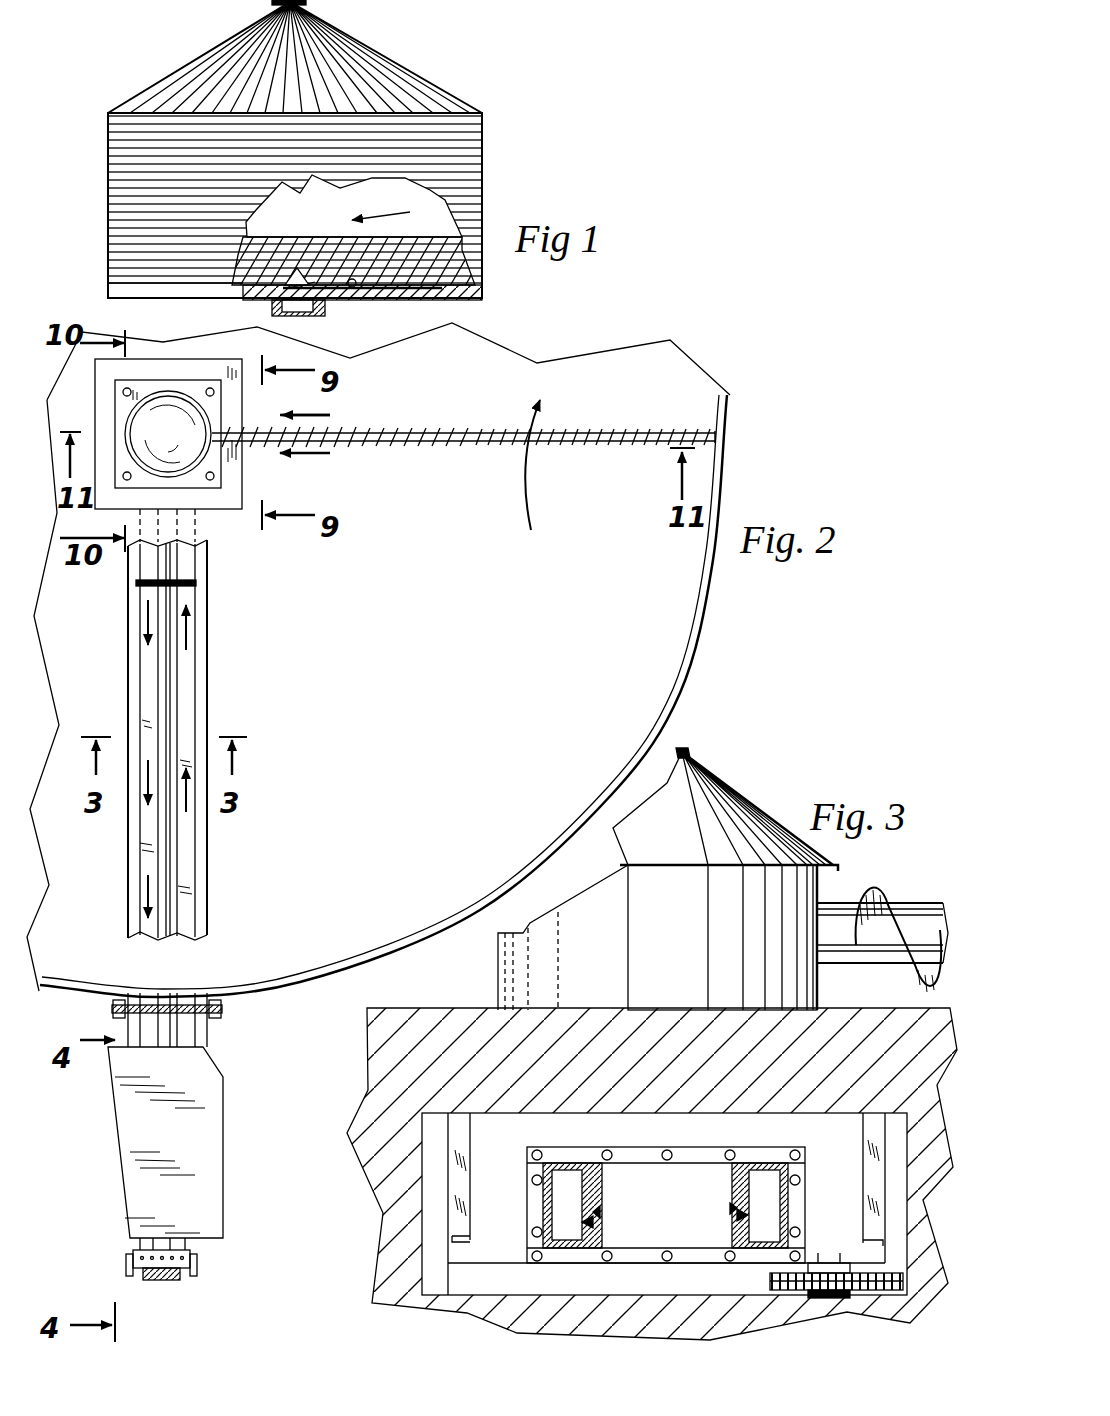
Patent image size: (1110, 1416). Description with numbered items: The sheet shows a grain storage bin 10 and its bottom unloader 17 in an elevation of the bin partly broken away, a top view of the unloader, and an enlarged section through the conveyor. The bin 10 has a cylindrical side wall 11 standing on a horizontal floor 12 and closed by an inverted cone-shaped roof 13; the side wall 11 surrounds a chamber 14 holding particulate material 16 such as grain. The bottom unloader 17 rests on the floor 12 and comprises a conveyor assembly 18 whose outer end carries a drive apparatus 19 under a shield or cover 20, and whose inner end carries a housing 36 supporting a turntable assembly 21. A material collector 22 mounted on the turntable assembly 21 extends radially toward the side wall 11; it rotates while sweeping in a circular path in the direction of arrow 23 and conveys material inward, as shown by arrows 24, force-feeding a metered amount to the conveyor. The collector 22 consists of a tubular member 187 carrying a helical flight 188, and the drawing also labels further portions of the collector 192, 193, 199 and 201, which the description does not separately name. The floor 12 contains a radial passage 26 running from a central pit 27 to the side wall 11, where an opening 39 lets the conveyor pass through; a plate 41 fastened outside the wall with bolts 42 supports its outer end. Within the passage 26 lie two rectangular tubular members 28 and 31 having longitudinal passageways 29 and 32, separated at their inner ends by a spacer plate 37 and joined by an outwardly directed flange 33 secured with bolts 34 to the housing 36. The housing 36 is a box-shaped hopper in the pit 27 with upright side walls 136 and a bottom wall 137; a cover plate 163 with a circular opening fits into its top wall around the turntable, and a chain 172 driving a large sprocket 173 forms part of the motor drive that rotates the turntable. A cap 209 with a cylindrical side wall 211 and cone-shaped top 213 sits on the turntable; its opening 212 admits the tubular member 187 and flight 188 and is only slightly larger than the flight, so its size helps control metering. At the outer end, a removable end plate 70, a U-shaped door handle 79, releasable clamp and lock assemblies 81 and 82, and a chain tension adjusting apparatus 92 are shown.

In FIG. 1, the material storage structure or bin 10 is at (317, 167).
In FIG. 1, the cylindrical side wall 11 is at (470, 168).
In FIG. 2, the cylindrical side wall 11 is at (708, 618).
In FIG. 1, the floor 12 is at (465, 300).
In FIG. 3, the floor 12 is at (382, 1118).
In FIG. 1, the inverted cone-shaped roof 13 is at (323, 30).
In FIG. 1, the cylindrical chamber 14 is at (354, 206).
In FIG. 1, the particulate material 16 is at (415, 247).
In FIG. 2, the particulate material 16 is at (680, 368).
In FIG. 1, the bottom unloader 17 is at (293, 265).
In FIG. 2, the bottom unloader 17 is at (400, 377).
In FIG. 2, the conveyor assembly 18 is at (183, 740).
In FIG. 3, the conveyor assembly 18 is at (657, 1166).
In FIG. 2, the drive apparatus 19 is at (164, 1142).
In FIG. 2, the shield or cover 20 is at (210, 1175).
In FIG. 2, the turntable assembly 21 is at (218, 494).
In FIG. 1, the material collector 22 is at (365, 290).
In FIG. 2, the material collector 22 is at (482, 448).
In FIG. 3, the material collector 22 is at (883, 917).
In FIG. 2, the arrow indicating sweep direction 23 is at (548, 480).
In FIG. 2, the arrows indicating material flow 24 is at (316, 455).
In FIG. 2, the radial passage 26 is at (200, 716).
In FIG. 3, the radial passage 26 is at (440, 1150).
In FIG. 1, the central pit 27 is at (305, 312).
In FIG. 2, the tubular member 28 is at (198, 690).
In FIG. 3, the tubular member 28 is at (753, 1171).
In FIG. 3, the longitudinal passageway 29 is at (745, 1182).
In FIG. 2, the tubular member 31 is at (146, 665).
In FIG. 3, the tubular member 31 is at (568, 1171).
In FIG. 3, the longitudinal passageway 32 is at (592, 1180).
In FIG. 3, the outwardly directed flange 33 is at (628, 1153).
In FIG. 3, the bolts 34 is at (534, 1147).
In FIG. 3, the housing 36 is at (612, 1204).
In FIG. 3, the spacer plate 37 is at (668, 1190).
In FIG. 2, the opening 39 is at (132, 1000).
In FIG. 2, the plate 41 is at (222, 1012).
In FIG. 2, the bolts 42 is at (113, 1012).
In FIG. 2, the removable outer end plate 70 is at (146, 1268).
In FIG. 2, the U-shaped handle 79 is at (160, 1282).
In FIG. 2, the releasable clamp and lock assembly 81 is at (112, 1264).
In FIG. 2, the releasable clamp and lock assembly 82 is at (204, 1272).
In FIG. 2, the chain tension adjusting apparatus 92 is at (203, 1033).
In FIG. 3, the upright side walls 136 is at (450, 1190).
In FIG. 3, the bottom wall 137 is at (486, 1257).
In FIG. 2, the cover plate 163 is at (178, 392).
In FIG. 3, the chain 172 is at (873, 1292).
In FIG. 3, the large sprocket 173 is at (822, 1298).
In FIG. 2, the tubular member 187 is at (336, 431).
In FIG. 3, the tubular member 187 is at (840, 938).
In FIG. 2, the helical flight 188 is at (371, 431).
In FIG. 3, the helical flight 188 is at (870, 882).
In FIG. 2, the auger section 192 is at (428, 443).
In FIG. 2, the auger flight section 193 is at (440, 431).
In FIG. 2, the outer auger section 199 is at (598, 442).
In FIG. 2, the outer auger flight 201 is at (622, 432).
In FIG. 2, the cap 209 is at (150, 430).
In FIG. 3, the cap 209 is at (692, 756).
In FIG. 3, the cylindrical upright side wall 211 is at (615, 905).
In FIG. 3, the opening 212 is at (822, 888).
In FIG. 3, the cone-shaped top 213 is at (720, 797).